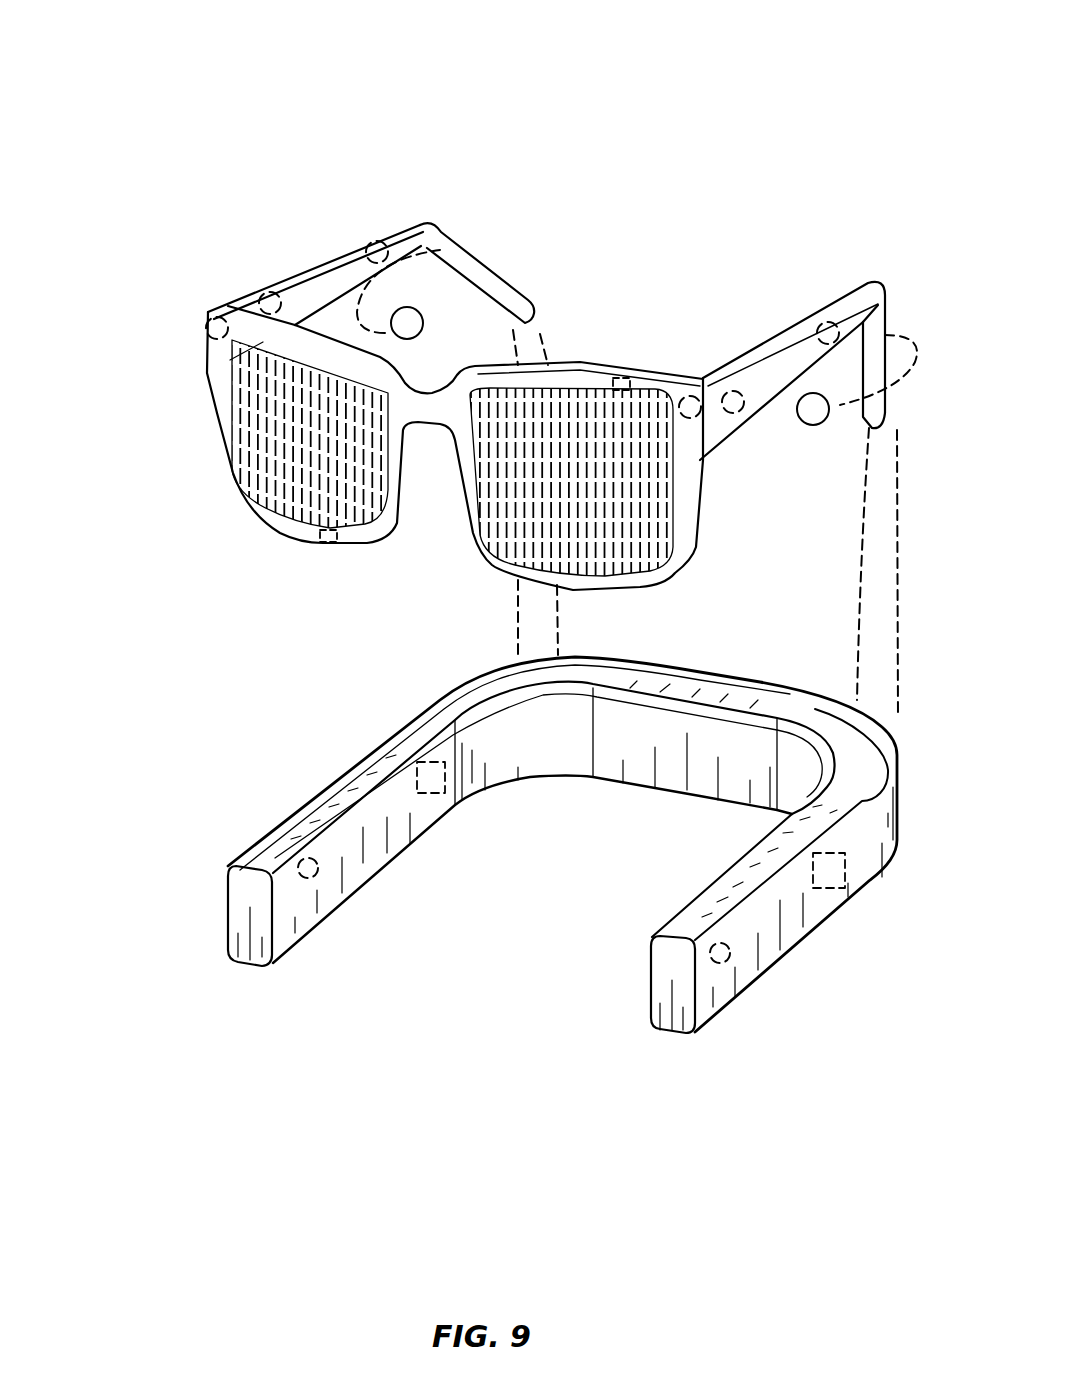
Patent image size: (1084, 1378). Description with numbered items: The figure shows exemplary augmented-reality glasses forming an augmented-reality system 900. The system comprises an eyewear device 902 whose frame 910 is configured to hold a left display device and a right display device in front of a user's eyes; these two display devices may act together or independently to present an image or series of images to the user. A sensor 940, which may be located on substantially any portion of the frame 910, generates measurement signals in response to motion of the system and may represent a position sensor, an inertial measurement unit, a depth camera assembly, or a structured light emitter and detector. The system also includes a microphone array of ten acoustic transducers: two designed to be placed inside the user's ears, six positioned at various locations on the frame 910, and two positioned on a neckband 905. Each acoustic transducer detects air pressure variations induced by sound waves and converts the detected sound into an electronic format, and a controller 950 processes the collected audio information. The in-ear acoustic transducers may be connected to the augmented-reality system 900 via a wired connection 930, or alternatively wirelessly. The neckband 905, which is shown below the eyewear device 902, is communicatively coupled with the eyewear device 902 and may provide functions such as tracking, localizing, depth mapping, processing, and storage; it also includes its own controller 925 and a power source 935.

The augmented-reality system 900 is at (124, 109).
The eyewear device 902 is at (315, 543).
The neckband 905 is at (227, 965).
The frame 910 is at (427, 230).
The controller 925 is at (820, 885).
The wired connection 930 is at (885, 598).
The power source 935 is at (435, 785).
The sensor 940 is at (322, 536).
The controller 950 is at (620, 378).